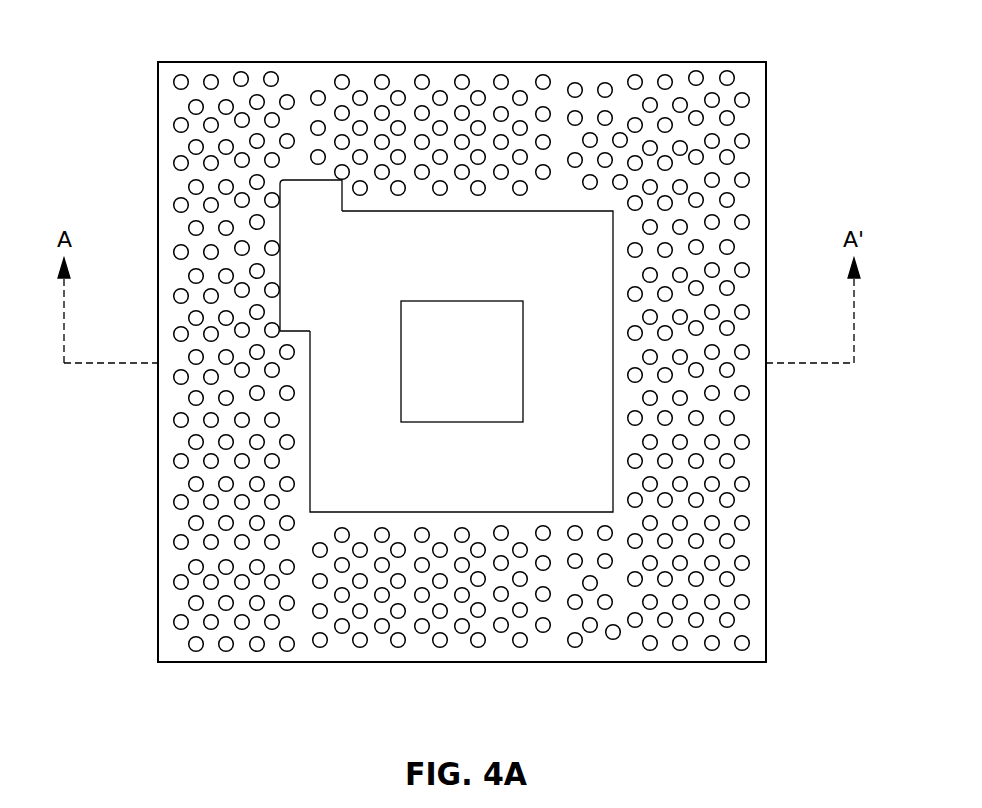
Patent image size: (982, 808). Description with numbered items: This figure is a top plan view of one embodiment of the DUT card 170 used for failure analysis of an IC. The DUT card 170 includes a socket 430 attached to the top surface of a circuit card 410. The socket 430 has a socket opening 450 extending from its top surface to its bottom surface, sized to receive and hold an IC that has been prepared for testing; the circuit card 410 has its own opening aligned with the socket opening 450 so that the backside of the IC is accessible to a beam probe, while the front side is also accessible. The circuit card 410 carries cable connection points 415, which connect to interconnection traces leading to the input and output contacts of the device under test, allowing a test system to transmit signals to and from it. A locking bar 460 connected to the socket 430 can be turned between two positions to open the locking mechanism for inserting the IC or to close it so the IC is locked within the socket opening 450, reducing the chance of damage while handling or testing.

The DUT card 170 is at (512, 411).
The circuit card 410 is at (200, 663).
The cable connection points 415 is at (344, 75).
The socket 430 is at (613, 468).
The socket opening 450 is at (432, 391).
The locking bar 460 is at (280, 230).